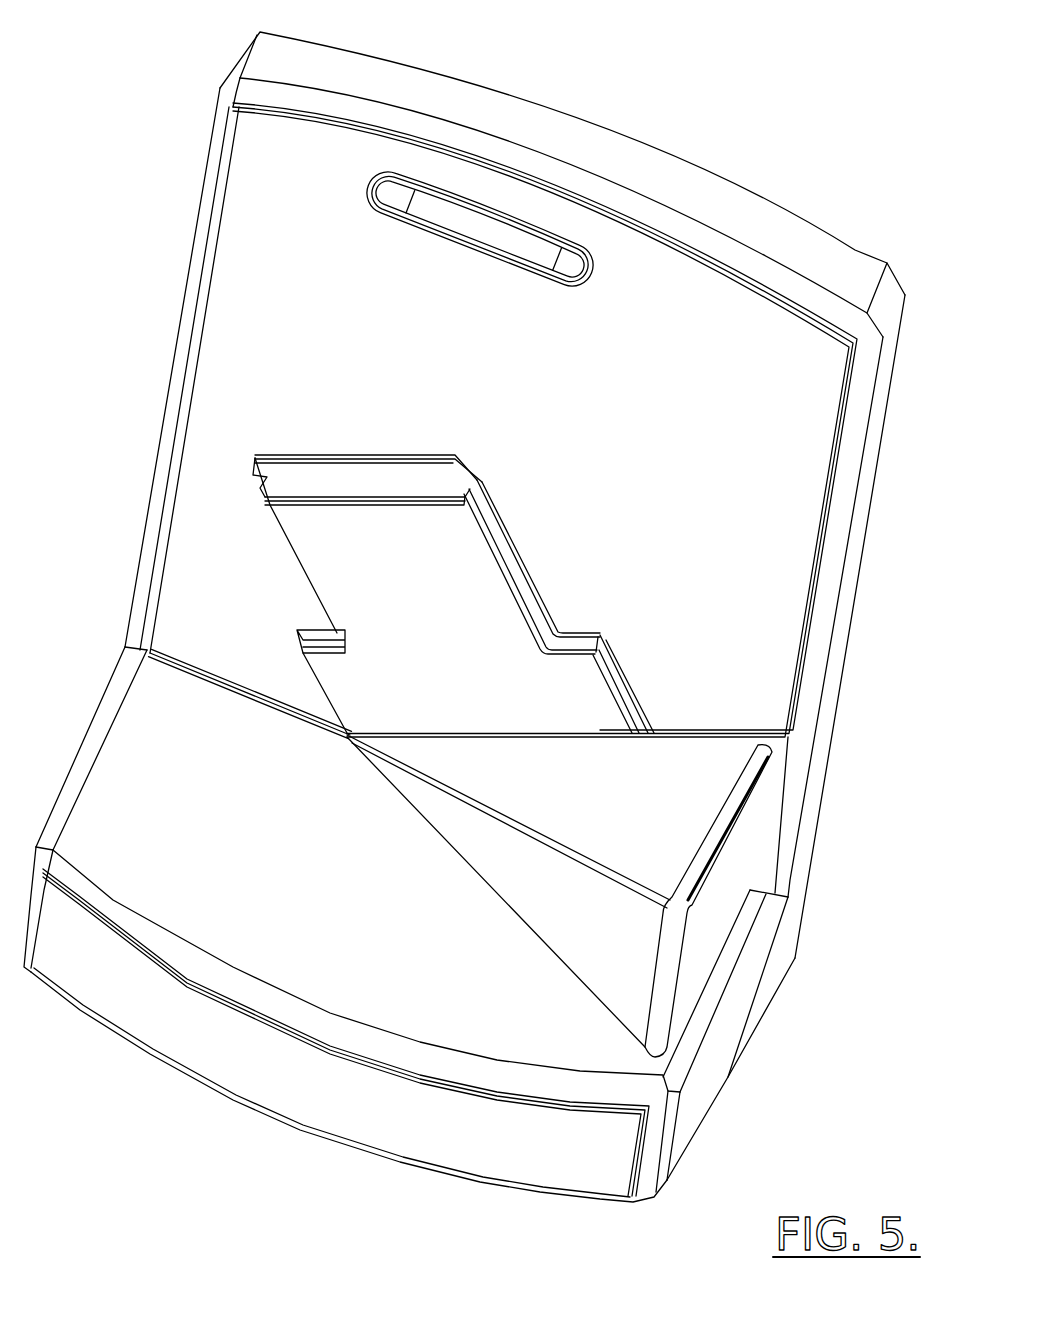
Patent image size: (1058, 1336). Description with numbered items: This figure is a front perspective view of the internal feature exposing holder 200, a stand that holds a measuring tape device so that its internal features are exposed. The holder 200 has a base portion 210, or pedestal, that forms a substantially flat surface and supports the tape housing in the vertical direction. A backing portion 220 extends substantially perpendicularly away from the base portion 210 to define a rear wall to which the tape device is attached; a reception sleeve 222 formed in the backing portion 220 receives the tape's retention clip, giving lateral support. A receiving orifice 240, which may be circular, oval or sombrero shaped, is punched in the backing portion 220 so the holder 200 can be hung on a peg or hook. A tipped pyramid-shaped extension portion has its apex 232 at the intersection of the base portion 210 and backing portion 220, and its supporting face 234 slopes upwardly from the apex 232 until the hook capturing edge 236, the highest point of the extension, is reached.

The internal feature exposing holder 200 is at (176, 67).
The base portion 210 is at (158, 1047).
The backing portion 220 is at (813, 347).
The reception sleeve 222 is at (300, 475).
The apex 232 is at (350, 750).
The supporting face 234 is at (703, 775).
The hook capturing edge 236 is at (770, 752).
The receiving orifice 240 is at (510, 198).